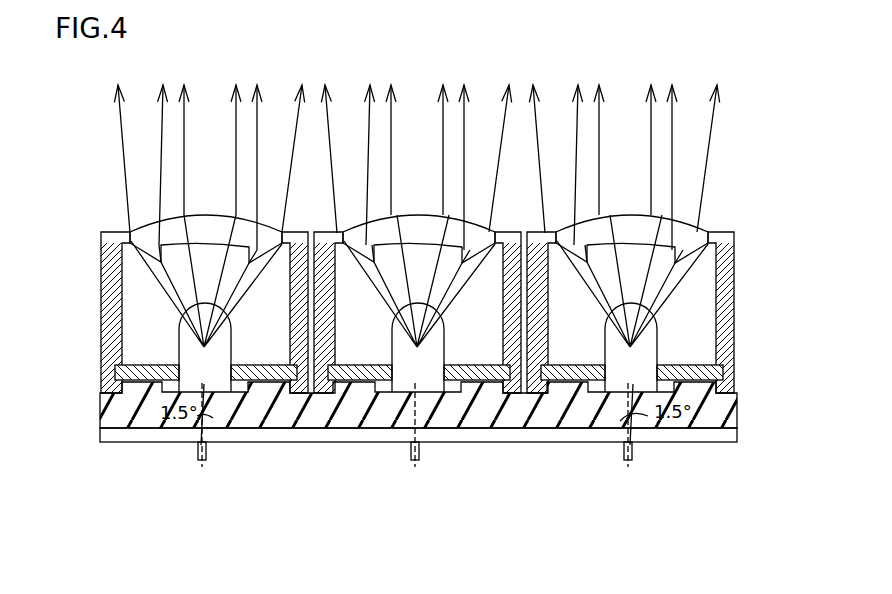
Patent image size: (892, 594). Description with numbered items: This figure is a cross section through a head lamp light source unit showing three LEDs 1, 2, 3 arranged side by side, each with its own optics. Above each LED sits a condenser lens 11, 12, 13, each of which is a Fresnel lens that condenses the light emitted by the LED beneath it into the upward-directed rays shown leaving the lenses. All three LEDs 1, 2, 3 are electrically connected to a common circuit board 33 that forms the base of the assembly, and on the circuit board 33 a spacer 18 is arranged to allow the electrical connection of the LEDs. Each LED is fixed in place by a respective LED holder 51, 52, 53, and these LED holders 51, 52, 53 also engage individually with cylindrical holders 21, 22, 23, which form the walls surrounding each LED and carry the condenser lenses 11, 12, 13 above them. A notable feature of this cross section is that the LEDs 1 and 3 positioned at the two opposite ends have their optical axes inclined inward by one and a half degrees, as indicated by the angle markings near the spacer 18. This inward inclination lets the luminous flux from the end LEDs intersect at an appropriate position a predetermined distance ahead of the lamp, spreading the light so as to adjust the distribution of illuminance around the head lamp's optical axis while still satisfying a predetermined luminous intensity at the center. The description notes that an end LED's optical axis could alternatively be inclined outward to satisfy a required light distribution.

The LED 1 is at (192, 352).
The LED 2 is at (417, 360).
The LED 3 is at (645, 350).
The condenser lens 11 is at (205, 213).
The condenser lens 12 is at (417, 213).
The condenser lens 13 is at (628, 213).
The spacer 18 is at (717, 413).
The cylindrical holder 21 is at (112, 283).
The cylindrical holder 22 is at (325, 313).
The cylindrical holder 23 is at (733, 291).
The circuit board 33 is at (280, 442).
The LED holder 51 is at (115, 372).
The LED holder 52 is at (368, 375).
The LED holder 53 is at (573, 372).